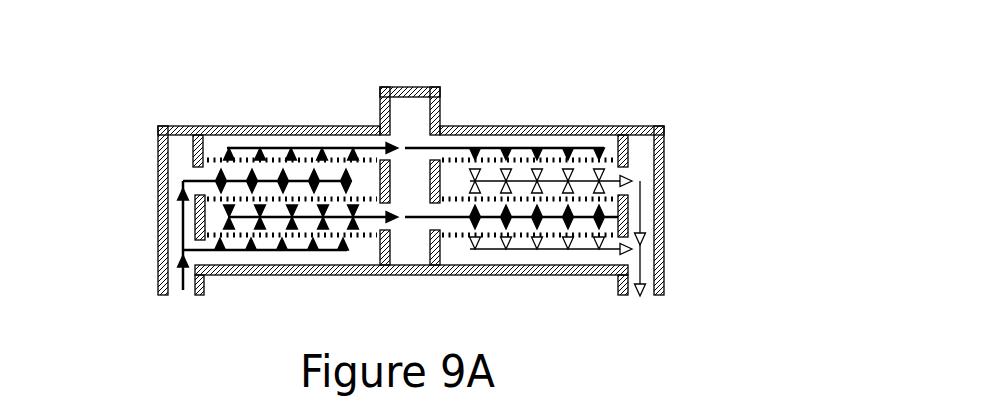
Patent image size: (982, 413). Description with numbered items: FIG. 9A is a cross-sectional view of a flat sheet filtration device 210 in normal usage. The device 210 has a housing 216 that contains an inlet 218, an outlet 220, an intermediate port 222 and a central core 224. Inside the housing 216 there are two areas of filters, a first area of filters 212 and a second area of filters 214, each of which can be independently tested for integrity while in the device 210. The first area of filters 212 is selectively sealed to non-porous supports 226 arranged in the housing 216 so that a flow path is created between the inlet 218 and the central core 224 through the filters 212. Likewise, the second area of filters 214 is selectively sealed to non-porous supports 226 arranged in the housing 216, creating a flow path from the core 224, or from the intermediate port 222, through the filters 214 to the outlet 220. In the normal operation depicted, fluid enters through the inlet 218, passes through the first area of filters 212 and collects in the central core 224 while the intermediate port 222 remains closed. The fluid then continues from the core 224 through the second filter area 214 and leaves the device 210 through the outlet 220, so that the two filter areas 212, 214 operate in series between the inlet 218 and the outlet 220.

The device 210 is at (537, 87).
The first area of filters 212 is at (243, 163).
The second area of filters 214 is at (585, 158).
The housing 216 is at (665, 213).
The inlet 218 is at (175, 297).
The outlet 220 is at (638, 305).
The intermediate port 222 is at (410, 128).
The central core 224 is at (413, 250).
The non-porous supports 226 is at (377, 253).